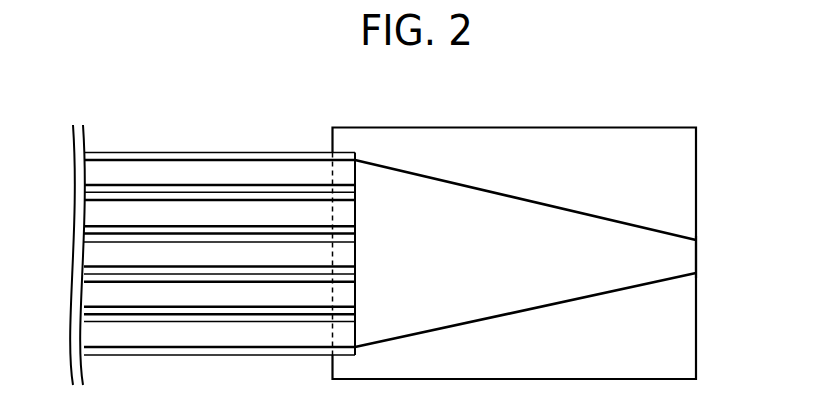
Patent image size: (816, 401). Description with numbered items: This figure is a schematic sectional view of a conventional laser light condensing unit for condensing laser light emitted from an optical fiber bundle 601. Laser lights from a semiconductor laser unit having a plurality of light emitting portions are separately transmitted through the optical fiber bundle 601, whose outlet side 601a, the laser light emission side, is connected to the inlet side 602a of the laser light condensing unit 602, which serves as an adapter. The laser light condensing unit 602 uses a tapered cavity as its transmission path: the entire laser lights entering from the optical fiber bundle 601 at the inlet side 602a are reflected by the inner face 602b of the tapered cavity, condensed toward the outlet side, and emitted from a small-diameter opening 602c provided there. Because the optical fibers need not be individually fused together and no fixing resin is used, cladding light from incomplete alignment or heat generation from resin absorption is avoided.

The optical fiber bundle 601 is at (205, 126).
The outlet side 601a is at (366, 277).
The laser light condensing unit 602 is at (578, 125).
The inlet side 602a is at (346, 127).
The inner face 602b is at (502, 197).
The small-diameter opening 602c is at (697, 262).